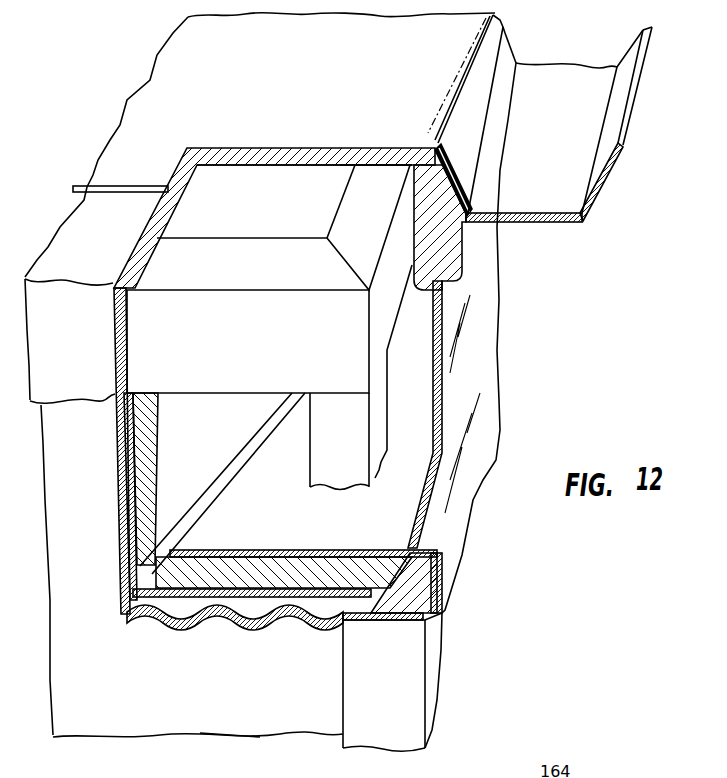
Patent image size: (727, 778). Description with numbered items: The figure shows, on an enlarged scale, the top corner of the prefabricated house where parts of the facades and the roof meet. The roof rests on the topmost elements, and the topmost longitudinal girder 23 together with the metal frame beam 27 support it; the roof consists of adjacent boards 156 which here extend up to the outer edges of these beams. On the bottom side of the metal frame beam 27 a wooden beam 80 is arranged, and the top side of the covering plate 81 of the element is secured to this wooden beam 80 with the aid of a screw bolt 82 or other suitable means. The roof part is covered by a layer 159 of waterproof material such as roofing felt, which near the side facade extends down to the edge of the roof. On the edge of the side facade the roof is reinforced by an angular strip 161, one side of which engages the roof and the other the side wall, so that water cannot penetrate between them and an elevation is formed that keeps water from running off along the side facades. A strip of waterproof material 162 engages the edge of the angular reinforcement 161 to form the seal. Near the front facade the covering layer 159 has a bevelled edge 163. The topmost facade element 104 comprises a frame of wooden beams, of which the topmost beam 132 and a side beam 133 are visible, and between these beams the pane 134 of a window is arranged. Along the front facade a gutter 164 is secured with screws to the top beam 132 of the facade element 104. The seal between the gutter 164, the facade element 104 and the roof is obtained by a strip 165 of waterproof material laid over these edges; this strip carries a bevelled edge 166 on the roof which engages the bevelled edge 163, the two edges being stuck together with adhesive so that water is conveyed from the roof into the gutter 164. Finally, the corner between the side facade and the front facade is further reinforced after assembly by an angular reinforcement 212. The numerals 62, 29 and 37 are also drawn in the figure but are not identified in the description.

The angular strip 161 is at (57, 245).
The strip of waterproof material 162 is at (86, 188).
The screw bolt 82 is at (43, 443).
The base 62 is at (158, 739).
The covering plate 81 is at (298, 730).
The bevelled edge 166 is at (378, 150).
The boards 156 is at (318, 167).
The bevelled edge 163 is at (355, 170).
The layer of waterproof material 159 is at (130, 283).
The wooden beam 80 is at (162, 398).
The metal frame beam 27 is at (250, 227).
The longitudinal girder 23 is at (347, 218).
The leg 29 is at (347, 480).
The strut 37 is at (260, 466).
The topmost beam 132 is at (455, 247).
The pane 134 is at (483, 443).
The strip of waterproof material 165 is at (452, 160).
The gutter 164 is at (568, 204).
The topmost facade element 104 is at (556, 376).
The side beam 133 is at (427, 548).
The angular reinforcement 212 is at (440, 673).